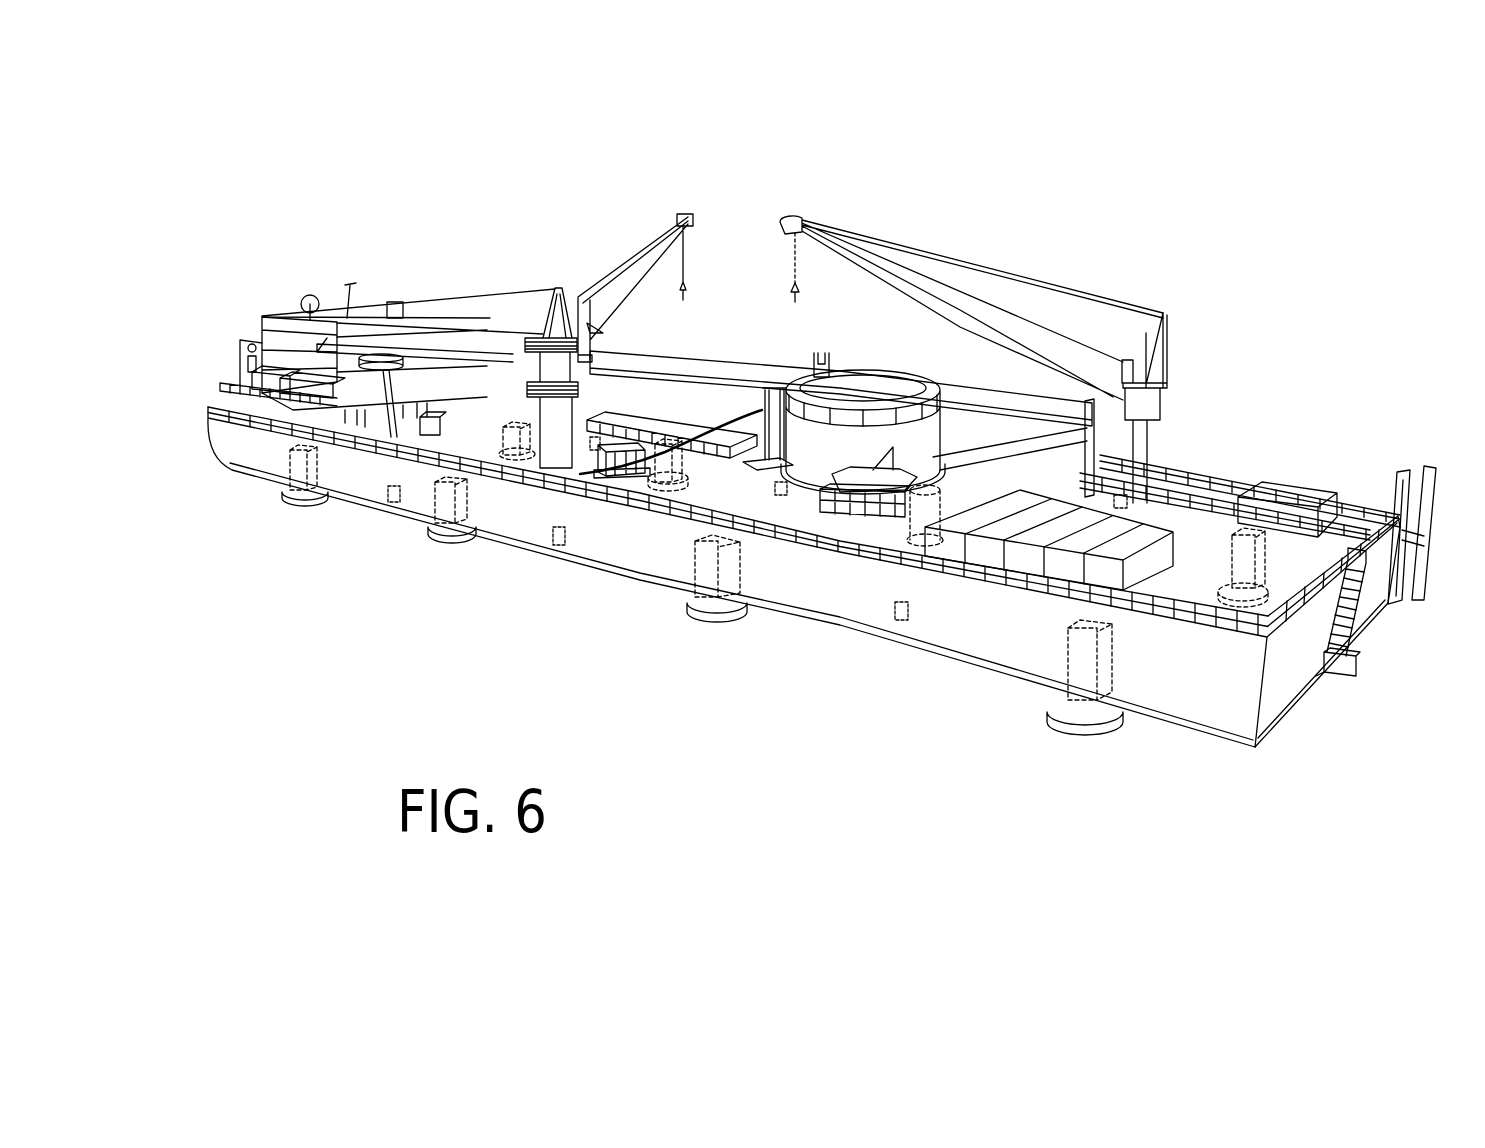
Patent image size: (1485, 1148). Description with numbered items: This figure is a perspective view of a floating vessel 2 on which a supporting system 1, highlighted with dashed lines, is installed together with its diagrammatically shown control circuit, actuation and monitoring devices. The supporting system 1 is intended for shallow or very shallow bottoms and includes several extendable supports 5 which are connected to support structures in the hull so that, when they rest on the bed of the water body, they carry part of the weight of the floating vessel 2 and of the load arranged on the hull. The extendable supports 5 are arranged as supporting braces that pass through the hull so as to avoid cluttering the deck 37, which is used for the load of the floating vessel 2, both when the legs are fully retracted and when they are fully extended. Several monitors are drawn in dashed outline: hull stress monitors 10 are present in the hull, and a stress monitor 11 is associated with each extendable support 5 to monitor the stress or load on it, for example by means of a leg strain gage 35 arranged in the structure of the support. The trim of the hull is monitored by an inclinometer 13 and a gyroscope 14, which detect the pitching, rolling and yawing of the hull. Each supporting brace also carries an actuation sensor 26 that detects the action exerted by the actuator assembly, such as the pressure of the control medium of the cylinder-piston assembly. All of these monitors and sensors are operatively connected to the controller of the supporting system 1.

The supporting system 1 is at (520, 411).
The floating vessel 2 is at (1228, 706).
The extendable support 5 is at (587, 343).
The hull stress monitor 10 is at (595, 433).
The stress monitor 11 is at (505, 423).
The inclinometer 13 is at (496, 408).
The gyroscope 14 is at (250, 387).
The actuation sensor 26 is at (1062, 626).
The leg strain gage 35 is at (1279, 519).
The deck 37 is at (1353, 530).